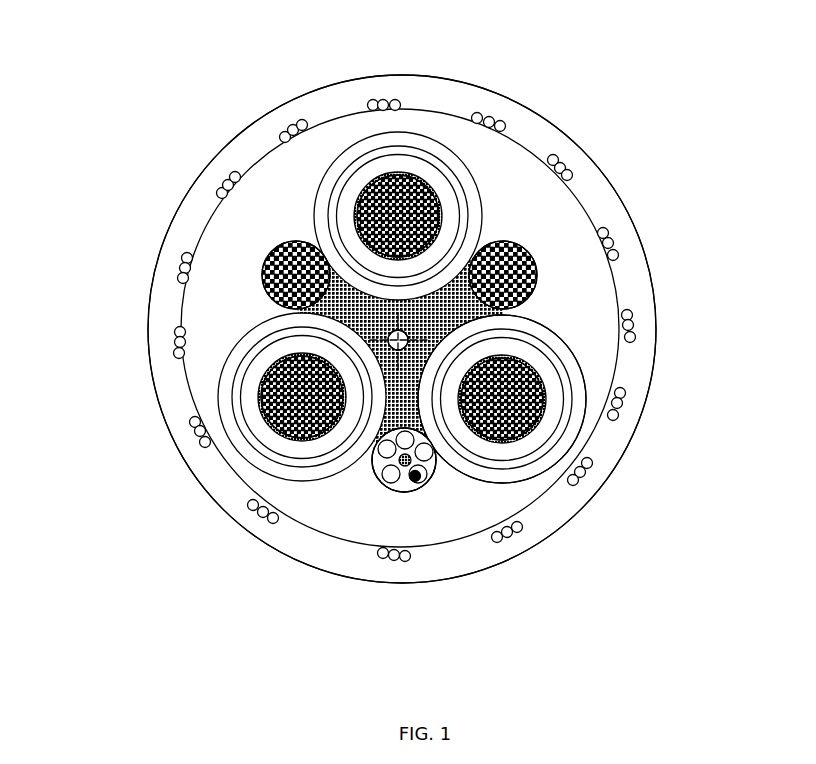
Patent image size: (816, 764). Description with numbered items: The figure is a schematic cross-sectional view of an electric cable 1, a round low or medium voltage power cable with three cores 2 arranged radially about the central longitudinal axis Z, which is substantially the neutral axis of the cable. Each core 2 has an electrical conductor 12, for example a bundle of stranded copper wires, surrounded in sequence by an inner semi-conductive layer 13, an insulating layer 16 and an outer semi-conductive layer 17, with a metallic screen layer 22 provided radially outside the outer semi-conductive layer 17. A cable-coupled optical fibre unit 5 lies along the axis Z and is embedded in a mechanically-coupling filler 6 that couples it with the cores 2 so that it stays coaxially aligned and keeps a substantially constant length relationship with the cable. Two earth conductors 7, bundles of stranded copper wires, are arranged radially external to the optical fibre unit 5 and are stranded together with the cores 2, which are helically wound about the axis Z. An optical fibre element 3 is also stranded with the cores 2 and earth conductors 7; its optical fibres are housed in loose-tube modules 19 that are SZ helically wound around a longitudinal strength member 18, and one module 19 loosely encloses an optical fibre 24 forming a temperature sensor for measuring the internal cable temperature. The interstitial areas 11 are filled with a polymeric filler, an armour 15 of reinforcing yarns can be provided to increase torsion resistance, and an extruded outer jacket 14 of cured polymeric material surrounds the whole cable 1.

The electric cable 1 is at (181, 96).
The core 2 is at (428, 117).
The optical fibre element 3 is at (373, 498).
The cable-coupled optical fibre unit 5 is at (379, 318).
The central longitudinal axis Z is at (410, 332).
The mechanically-coupling filler 6 is at (397, 391).
The earth conductor 7 is at (293, 263).
The interstitial area 11 is at (203, 312).
The electrical conductor 12 is at (290, 402).
The inner semi-conductive layer 13 is at (547, 400).
The outer jacket 14 is at (160, 272).
The armour 15 is at (180, 452).
The insulating layer 16 is at (553, 428).
The outer semi-conductive layer 17 is at (528, 478).
The longitudinal strength member 18 is at (376, 467).
The module 19 is at (434, 472).
The metallic screen layer 22 is at (543, 462).
The optical fibre 24 is at (413, 480).